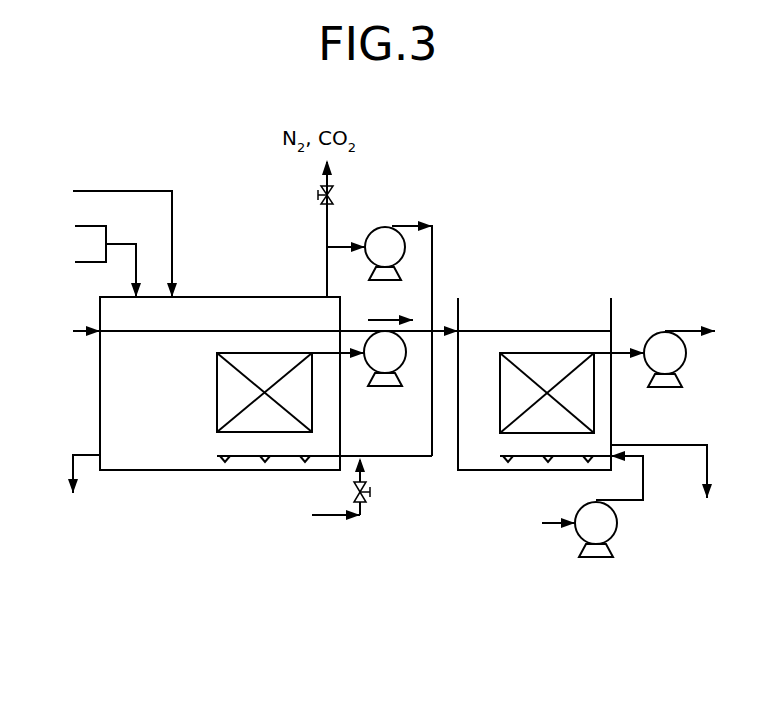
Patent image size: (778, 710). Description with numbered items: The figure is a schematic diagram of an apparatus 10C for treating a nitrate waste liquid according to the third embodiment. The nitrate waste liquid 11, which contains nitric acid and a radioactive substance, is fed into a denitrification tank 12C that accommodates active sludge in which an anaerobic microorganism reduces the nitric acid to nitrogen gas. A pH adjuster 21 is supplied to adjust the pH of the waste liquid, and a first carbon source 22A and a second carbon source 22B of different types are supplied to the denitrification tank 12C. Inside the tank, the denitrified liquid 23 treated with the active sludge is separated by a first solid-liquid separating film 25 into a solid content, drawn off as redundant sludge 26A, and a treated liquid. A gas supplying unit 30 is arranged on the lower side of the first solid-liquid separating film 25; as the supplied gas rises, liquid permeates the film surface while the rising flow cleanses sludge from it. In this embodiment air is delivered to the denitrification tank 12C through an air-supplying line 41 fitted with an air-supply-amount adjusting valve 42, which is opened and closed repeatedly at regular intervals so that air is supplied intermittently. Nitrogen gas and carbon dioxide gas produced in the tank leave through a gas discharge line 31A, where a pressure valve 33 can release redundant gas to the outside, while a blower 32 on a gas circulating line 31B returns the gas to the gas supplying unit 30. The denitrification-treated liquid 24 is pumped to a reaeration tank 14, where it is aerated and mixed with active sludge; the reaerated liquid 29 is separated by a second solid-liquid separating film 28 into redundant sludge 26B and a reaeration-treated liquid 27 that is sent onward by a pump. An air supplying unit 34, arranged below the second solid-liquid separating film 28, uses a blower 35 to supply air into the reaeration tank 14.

The apparatus for treating a nitrate waste liquid 10C is at (549, 197).
The nitrate waste liquid 11 is at (70, 331).
The denitrification tank 12C is at (145, 572).
The reaeration tank 14 is at (621, 613).
The pH adjuster 21 is at (107, 239).
The first carbon source 22A is at (83, 255).
The second carbon source 22B is at (65, 259).
The denitrified liquid 23 is at (205, 347).
The denitrification-treated liquid 24 is at (397, 317).
The first solid-liquid separating film 25 is at (217, 392).
The redundant sludge 26A is at (76, 491).
The redundant sludge 26B is at (667, 489).
The reaeration-treated liquid 27 is at (694, 354).
The second solid-liquid separating film 28 is at (543, 352).
The reaerated liquid 29 is at (482, 353).
The gas supplying unit 30 is at (218, 450).
The gas discharge line 31A is at (325, 243).
The gas circulating line 31B is at (405, 220).
The blower 32 is at (370, 228).
The pressure valve 33 is at (320, 207).
The air supplying unit 34 is at (585, 453).
The blower 35 is at (620, 528).
The air-supplying line 41 is at (332, 517).
The air-supply-amount adjusting valve 42 is at (366, 497).